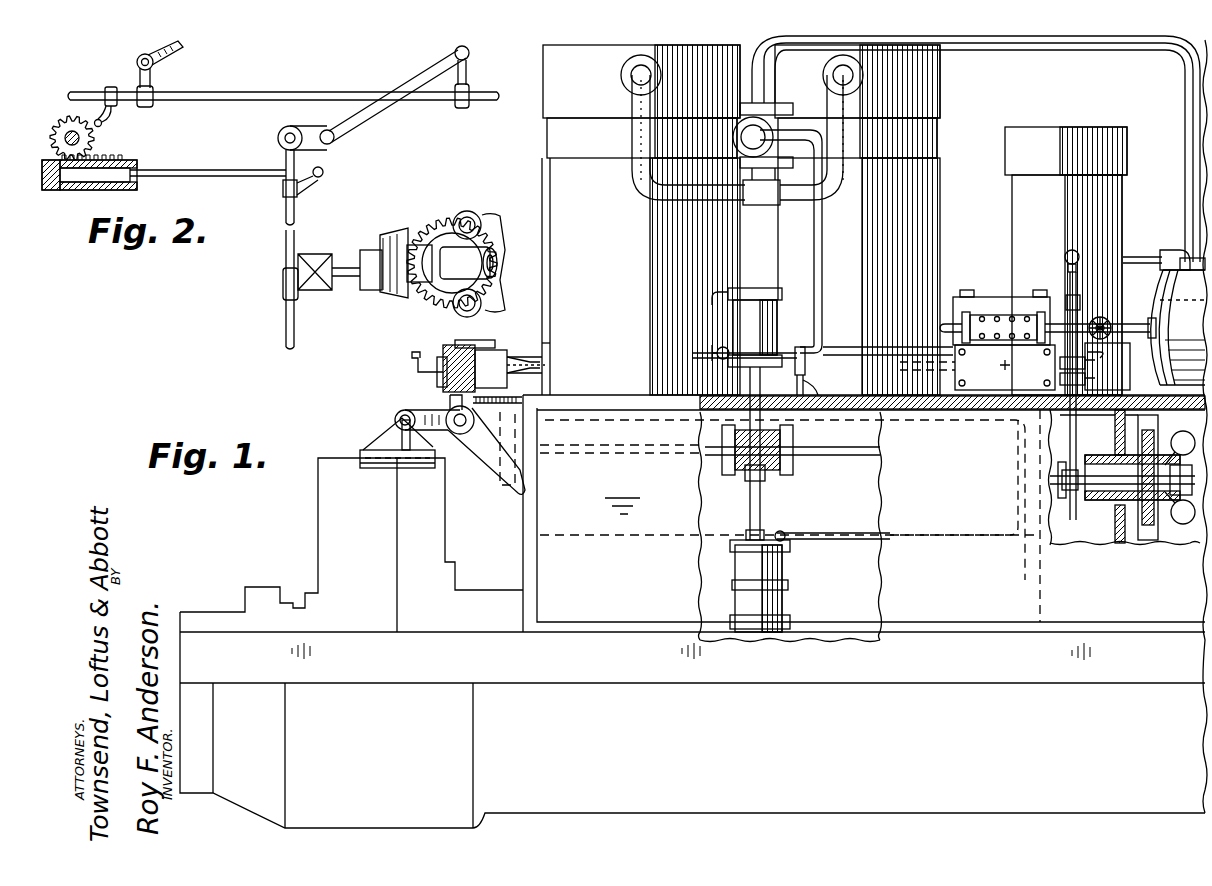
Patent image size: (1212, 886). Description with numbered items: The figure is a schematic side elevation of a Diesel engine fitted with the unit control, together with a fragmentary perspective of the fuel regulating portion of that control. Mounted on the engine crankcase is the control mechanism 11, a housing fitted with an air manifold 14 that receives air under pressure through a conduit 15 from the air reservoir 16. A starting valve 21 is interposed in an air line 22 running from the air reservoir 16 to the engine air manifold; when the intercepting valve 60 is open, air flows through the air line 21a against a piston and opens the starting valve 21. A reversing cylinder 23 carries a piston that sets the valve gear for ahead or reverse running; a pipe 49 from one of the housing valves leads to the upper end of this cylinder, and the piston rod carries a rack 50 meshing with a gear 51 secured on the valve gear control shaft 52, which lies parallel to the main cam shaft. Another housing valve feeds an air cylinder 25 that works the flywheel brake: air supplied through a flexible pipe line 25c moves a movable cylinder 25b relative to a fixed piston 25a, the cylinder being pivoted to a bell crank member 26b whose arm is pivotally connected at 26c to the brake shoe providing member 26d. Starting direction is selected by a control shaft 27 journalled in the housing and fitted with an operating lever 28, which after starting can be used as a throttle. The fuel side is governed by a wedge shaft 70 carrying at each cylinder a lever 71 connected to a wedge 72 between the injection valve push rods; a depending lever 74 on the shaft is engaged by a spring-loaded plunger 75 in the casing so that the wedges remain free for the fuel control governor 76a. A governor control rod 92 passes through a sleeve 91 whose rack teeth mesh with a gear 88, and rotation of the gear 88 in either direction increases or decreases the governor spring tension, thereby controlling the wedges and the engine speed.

In FIG. 1, the control mechanism 11 is at (993, 290).
In FIG. 1, the air manifold 14 is at (1005, 316).
In FIG. 1, the conduit 15 is at (1132, 308).
In FIG. 1, the air reservoir 16 is at (1178, 327).
In FIG. 1, the starting valve 21 is at (768, 128).
In FIG. 1, the air line 21a is at (815, 250).
In FIG. 1, the air line 22 is at (968, 45).
In FIG. 1, the reversing cylinder 23 is at (784, 570).
In FIG. 1, the air cylinder 25 is at (445, 350).
In FIG. 1, the fixed piston 25a is at (512, 362).
In FIG. 1, the movable cylinder 25b is at (472, 342).
In FIG. 1, the flexible pipe line 25c is at (413, 362).
In FIG. 1, the bell crank member 26b is at (412, 402).
In FIG. 1, the pivot connection 26c is at (436, 432).
In FIG. 1, the brake shoe providing member 26d is at (383, 452).
In FIG. 1, the control shaft 27 is at (1107, 366).
In FIG. 1, the operating lever 28 is at (1078, 268).
In FIG. 1, the pipe 49 is at (810, 535).
In FIG. 1, the rack 50 is at (762, 475).
In FIG. 1, the gear 51 is at (742, 468).
In FIG. 1, the valve gear control shaft 52 is at (846, 457).
In FIG. 1, the intercepting valve 60 is at (808, 405).
In FIG. 2, the wedge shaft 70 is at (228, 96).
In FIG. 2, the lever 71 is at (152, 80).
In FIG. 2, the wedge 72 is at (178, 46).
In FIG. 2, the lever 74 is at (113, 110).
In FIG. 2, the plunger 75 is at (101, 127).
In FIG. 1, the fuel control governor 76a is at (1182, 522).
In FIG. 2, the fuel control governor 76a is at (470, 222).
In FIG. 2, the gear 88 is at (60, 122).
In FIG. 2, the sleeve 91 is at (56, 191).
In FIG. 1, the governor control rod 92 is at (1062, 385).
In FIG. 2, the governor control rod 92 is at (203, 178).